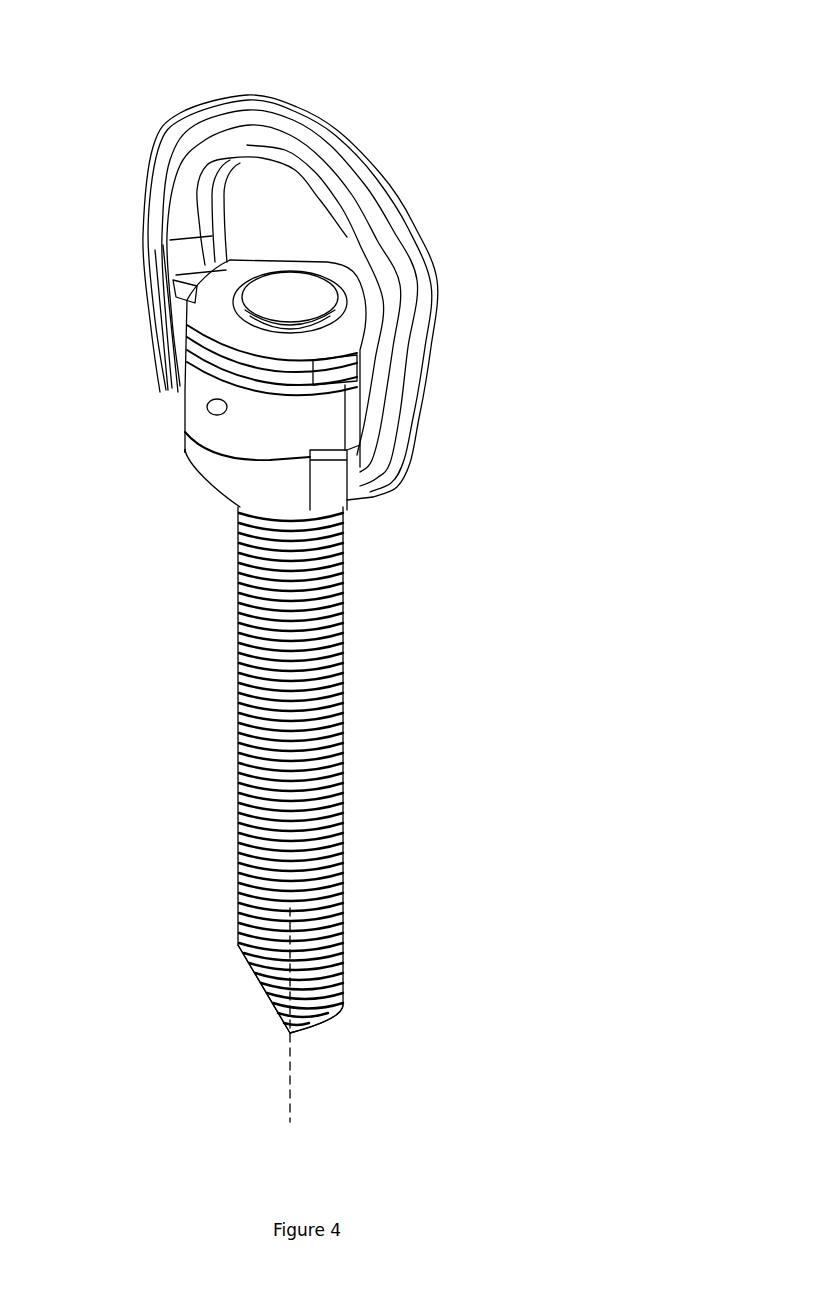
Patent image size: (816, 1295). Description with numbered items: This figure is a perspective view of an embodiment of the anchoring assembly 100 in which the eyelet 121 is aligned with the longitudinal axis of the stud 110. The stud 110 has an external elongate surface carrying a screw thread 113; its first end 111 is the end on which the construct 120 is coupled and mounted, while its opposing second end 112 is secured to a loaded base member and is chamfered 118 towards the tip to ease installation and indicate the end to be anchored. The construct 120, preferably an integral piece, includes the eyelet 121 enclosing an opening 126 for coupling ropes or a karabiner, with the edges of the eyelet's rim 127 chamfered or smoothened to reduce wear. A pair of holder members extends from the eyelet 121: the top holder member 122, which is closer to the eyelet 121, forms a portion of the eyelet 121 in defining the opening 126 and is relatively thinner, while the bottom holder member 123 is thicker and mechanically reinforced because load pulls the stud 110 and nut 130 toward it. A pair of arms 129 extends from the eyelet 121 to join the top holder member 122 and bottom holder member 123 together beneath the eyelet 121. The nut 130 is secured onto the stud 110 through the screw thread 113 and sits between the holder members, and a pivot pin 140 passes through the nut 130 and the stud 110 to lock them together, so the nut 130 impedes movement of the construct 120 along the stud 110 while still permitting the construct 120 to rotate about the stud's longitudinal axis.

The anchoring assembly 100 is at (320, 600).
The stud 110 is at (292, 784).
The first end 111 is at (308, 308).
The second end 112 is at (323, 970).
The screw thread 113 is at (332, 637).
The chamfer 118 is at (255, 970).
The construct 120 is at (320, 255).
The eyelet 121 is at (361, 183).
The top holder member 122 is at (348, 377).
The bottom holder member 123 is at (312, 487).
The opening 126 is at (300, 212).
The rim of the eyelet 127 is at (196, 240).
The arms 129 is at (183, 338).
The nut 130 is at (297, 368).
The pivot pin 140 is at (213, 405).